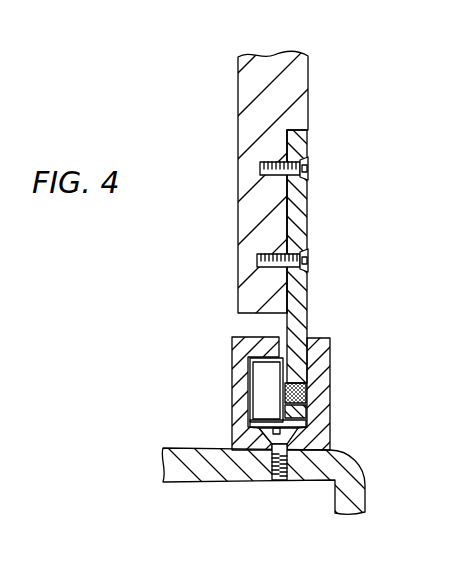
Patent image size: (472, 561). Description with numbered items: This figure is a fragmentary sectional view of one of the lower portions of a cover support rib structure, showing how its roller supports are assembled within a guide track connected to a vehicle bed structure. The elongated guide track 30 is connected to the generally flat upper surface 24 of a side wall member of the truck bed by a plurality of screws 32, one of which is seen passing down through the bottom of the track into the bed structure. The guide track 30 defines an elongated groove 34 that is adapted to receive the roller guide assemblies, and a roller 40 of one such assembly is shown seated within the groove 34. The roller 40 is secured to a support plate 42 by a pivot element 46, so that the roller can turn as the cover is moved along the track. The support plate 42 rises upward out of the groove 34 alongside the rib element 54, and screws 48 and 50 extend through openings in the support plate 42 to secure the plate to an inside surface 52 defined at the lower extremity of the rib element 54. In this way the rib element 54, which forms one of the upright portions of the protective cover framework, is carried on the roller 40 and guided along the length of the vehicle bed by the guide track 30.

The upper surface 24 is at (191, 452).
The guide track 30 is at (323, 360).
The screw 32 is at (300, 432).
The groove 34 is at (300, 423).
The roller 40 is at (263, 376).
The support plate 42 is at (308, 219).
The pivot element 46 is at (306, 398).
The screw 48 is at (311, 164).
The screw 50 is at (311, 262).
The inside surface 52 is at (290, 197).
The rib element 54 is at (255, 100).